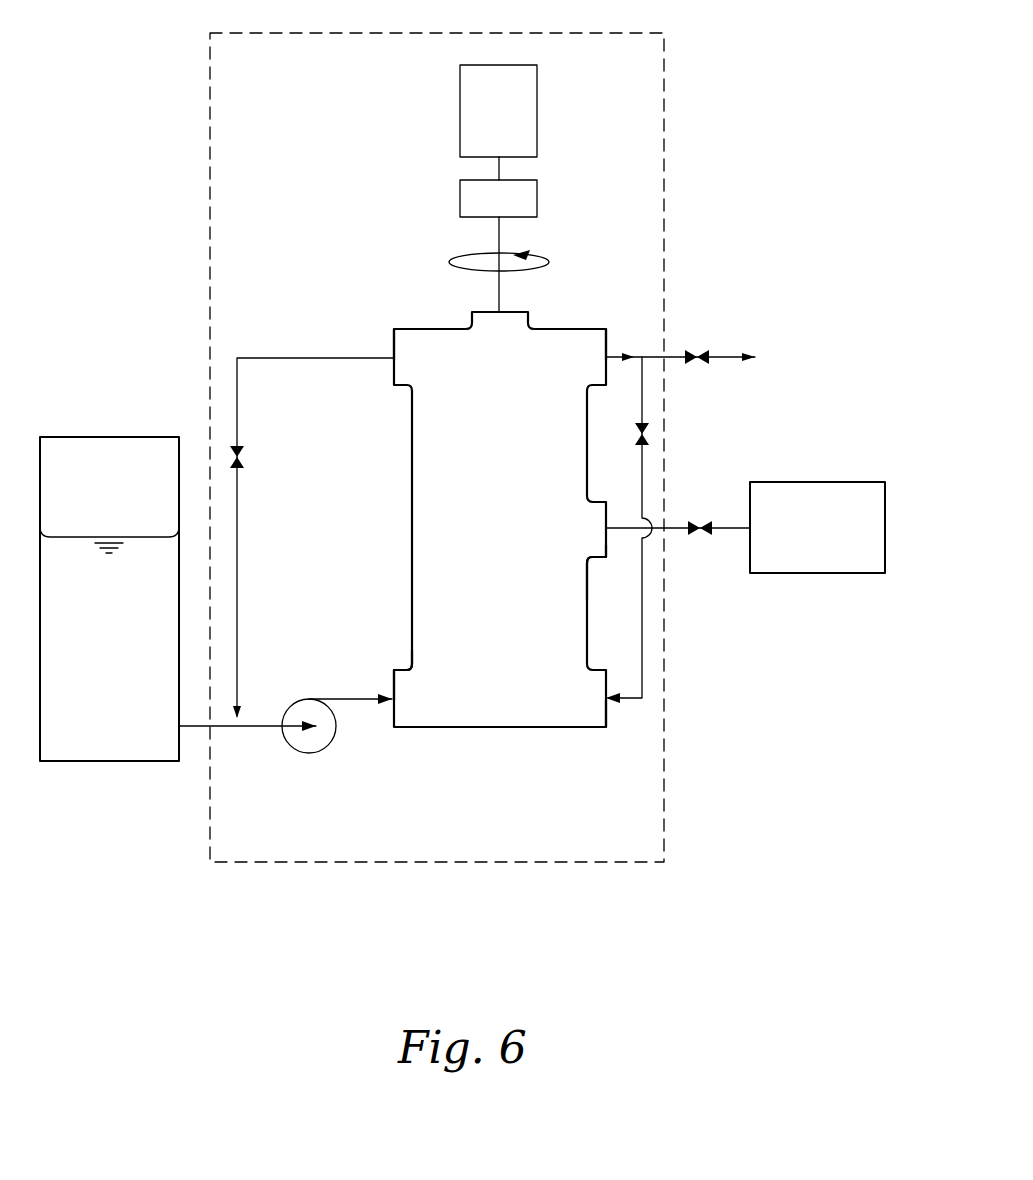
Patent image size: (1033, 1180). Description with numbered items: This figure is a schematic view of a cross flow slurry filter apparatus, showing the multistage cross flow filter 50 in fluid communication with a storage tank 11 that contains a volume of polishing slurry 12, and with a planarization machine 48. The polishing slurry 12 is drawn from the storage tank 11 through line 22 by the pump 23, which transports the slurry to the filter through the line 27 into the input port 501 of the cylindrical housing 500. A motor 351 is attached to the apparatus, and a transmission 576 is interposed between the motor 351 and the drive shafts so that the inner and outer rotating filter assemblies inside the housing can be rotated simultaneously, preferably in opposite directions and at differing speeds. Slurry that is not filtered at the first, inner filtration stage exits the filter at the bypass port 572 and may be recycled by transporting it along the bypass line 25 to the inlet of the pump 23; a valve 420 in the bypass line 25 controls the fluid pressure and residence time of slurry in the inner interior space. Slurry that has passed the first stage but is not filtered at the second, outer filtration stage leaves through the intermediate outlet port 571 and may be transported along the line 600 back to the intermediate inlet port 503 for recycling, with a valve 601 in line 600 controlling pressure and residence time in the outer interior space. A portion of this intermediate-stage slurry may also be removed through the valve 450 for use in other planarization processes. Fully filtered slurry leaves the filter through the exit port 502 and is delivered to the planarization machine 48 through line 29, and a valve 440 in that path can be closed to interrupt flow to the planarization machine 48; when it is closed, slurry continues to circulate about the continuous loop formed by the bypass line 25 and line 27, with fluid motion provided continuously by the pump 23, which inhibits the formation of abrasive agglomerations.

The multistage cross flow filter 50 is at (664, 33).
The motor 351 is at (516, 121).
The transmission 576 is at (516, 211).
The intermediate outlet port 571 is at (606, 340).
The bypass port 572 is at (394, 342).
The cylindrical housing 500 is at (412, 522).
The input port 501 is at (394, 681).
The exit port 502 is at (607, 548).
The intermediate inlet port 503 is at (606, 727).
The bypass line 25 is at (271, 357).
The valve 420 is at (241, 456).
The storage tank 11 is at (112, 437).
The polishing slurry 12 is at (117, 647).
The line 22 is at (220, 728).
The pump 23 is at (300, 702).
The line 27 is at (352, 701).
The valve 450 is at (697, 350).
The line 600 is at (645, 477).
The valve 601 is at (645, 437).
The line 29 is at (673, 537).
The valve 440 is at (703, 537).
The planarization machine 48 is at (829, 538).